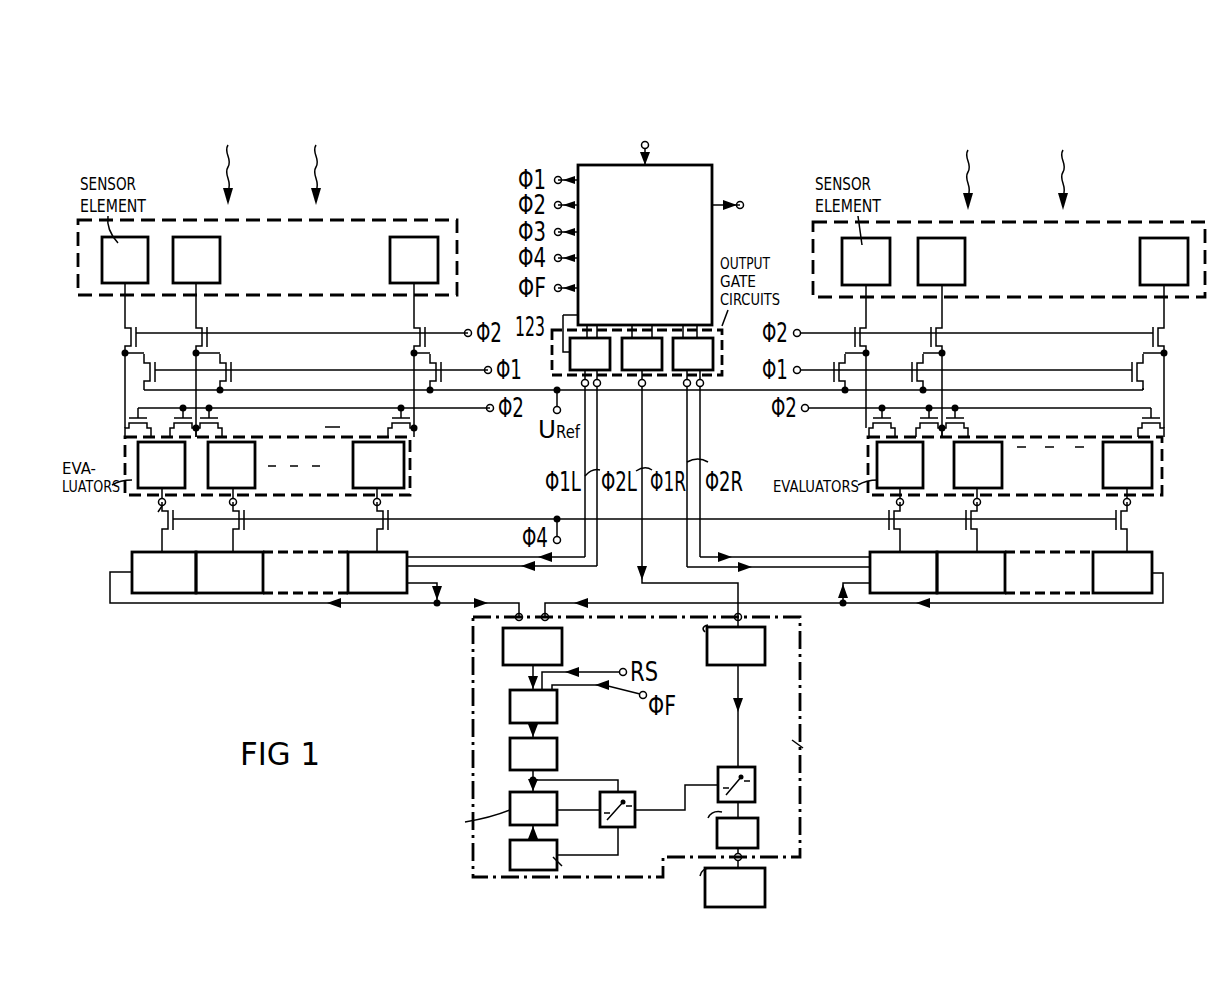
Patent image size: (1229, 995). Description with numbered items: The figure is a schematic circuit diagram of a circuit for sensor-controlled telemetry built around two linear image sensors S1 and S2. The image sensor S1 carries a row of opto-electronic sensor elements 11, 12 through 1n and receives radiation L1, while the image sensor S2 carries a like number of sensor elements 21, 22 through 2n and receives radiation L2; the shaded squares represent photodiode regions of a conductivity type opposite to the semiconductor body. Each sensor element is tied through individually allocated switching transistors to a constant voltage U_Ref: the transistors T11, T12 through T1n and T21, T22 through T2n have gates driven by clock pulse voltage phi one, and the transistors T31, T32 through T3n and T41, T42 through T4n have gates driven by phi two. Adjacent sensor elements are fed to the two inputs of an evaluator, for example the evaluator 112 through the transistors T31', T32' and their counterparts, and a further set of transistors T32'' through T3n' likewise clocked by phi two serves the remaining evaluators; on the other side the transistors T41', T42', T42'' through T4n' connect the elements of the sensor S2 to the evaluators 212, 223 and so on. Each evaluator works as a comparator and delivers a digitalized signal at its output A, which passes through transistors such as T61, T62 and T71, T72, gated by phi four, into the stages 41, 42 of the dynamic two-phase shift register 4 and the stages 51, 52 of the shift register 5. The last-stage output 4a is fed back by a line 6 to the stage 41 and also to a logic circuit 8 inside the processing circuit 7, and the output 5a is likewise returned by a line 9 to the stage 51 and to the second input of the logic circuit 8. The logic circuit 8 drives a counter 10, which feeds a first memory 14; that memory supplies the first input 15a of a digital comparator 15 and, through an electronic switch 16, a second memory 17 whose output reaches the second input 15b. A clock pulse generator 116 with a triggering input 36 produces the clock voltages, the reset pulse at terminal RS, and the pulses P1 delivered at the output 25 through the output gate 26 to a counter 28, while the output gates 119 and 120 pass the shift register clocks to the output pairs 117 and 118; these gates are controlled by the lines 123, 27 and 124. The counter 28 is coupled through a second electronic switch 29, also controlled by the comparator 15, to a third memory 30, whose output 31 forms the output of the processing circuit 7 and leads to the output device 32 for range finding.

The sensor element 11 is at (115, 260).
The sensor element 12 is at (209, 260).
The sensor element 1n is at (399, 260).
The sensor element 21 is at (855, 261).
The sensor element 22 is at (954, 261).
The sensor element 2n is at (1149, 261).
The image sensor S1 is at (283, 257).
The image sensor S2 is at (993, 259).
The radiation L1 is at (272, 175).
The radiation L2 is at (1015, 180).
The clock pulse generator 116 is at (645, 245).
The triggering input 36 is at (658, 148).
The line 27 is at (609, 330).
The line 124 is at (658, 330).
The line 123 is at (231, 465).
The output gate 119 is at (590, 354).
The output gate 26 is at (642, 354).
The output gate 120 is at (693, 354).
The output pair 117 is at (599, 390).
The output 25 is at (645, 390).
The output pair 118 is at (702, 390).
The evaluator 112 is at (161, 465).
The evaluator 212 is at (900, 465).
The evaluator 223 is at (978, 465).
The shift register stage 41 is at (164, 572).
The shift register stage 42 is at (229, 572).
The shift register 4 is at (305, 558).
The output 4a is at (465, 609).
The line 6 is at (189, 606).
The shift register stage 51 is at (903, 572).
The shift register stage 52 is at (971, 572).
The shift register 5 is at (980, 598).
The output 5a is at (853, 604).
The line 9 is at (848, 586).
The processing circuit 7 is at (795, 710).
The logic circuit 8 is at (560, 646).
The counter 10 is at (566, 706).
The first memory 14 is at (563, 754).
The digital comparator 15 is at (465, 812).
The first input 15a is at (533, 781).
The second input 15b is at (533, 830).
The electronic switch 16 is at (636, 797).
The second memory 17 is at (565, 857).
The counter 28 is at (703, 645).
The electronic switch 29 is at (751, 784).
The third memory 30 is at (707, 830).
The output 31 is at (758, 871).
The output device 32 is at (680, 887).
The switching transistor T31 is at (148, 328).
The switching transistor T32 is at (219, 328).
The switching transistor T3n is at (437, 328).
The switching transistor T11 is at (165, 366).
The switching transistor T12 is at (243, 366).
The switching transistor T1n is at (453, 366).
The switching transistor T31' is at (115, 431).
The switching transistor T32' is at (137, 406).
The switching transistor T32'' is at (247, 423).
The switching transistor T3n' is at (426, 425).
The switching transistor T61 is at (185, 526).
The switching transistor T62 is at (256, 526).
The switching transistor T41 is at (845, 328).
The switching transistor T42 is at (920, 328).
The switching transistor T4n is at (1142, 328).
The switching transistor T21 is at (827, 363).
The switching transistor T22 is at (905, 363).
The switching transistor T2n is at (1121, 363).
The switching transistor T41' is at (858, 435).
The switching transistor T42' is at (937, 461).
The switching transistor T42'' is at (1003, 424).
The switching transistor T4n' is at (1173, 424).
The switching transistor T71 is at (878, 526).
The switching transistor T72 is at (954, 526).
The output A is at (153, 511).
The pulse P1 is at (640, 566).
The terminal RS is at (744, 205).